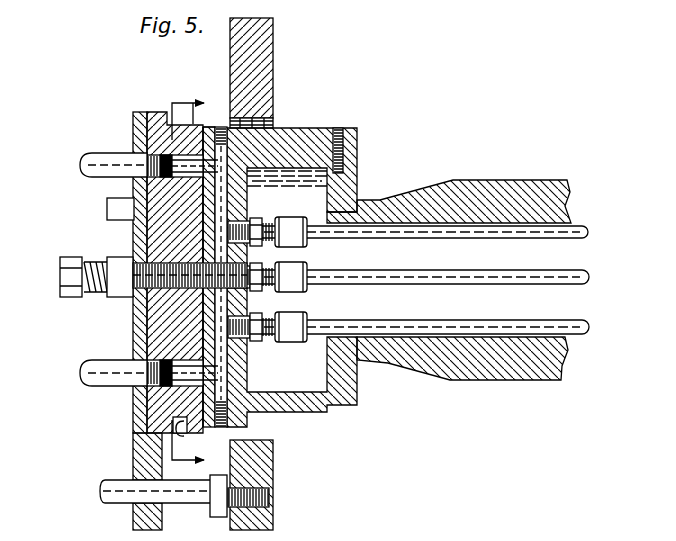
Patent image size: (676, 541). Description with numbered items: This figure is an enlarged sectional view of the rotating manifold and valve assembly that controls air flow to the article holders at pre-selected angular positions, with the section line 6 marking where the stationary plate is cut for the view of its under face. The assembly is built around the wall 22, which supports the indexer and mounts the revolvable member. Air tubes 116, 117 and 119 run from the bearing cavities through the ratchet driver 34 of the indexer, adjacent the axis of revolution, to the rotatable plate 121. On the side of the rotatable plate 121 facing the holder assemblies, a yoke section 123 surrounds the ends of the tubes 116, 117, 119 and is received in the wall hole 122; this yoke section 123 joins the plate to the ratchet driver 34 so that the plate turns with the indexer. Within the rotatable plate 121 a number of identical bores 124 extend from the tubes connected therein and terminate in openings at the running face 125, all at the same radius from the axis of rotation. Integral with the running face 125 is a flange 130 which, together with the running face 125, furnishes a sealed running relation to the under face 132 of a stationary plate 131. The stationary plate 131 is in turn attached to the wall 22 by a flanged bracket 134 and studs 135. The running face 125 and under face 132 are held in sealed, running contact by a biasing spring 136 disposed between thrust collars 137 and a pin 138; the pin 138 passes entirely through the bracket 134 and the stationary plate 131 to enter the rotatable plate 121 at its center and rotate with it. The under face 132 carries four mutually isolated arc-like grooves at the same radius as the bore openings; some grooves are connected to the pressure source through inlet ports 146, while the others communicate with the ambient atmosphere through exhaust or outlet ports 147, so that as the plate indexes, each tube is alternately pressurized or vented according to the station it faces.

The wall 22 is at (262, 50).
The wall hole 122 is at (274, 120).
The yoke section 123 is at (291, 406).
The ratchet driver 34 is at (505, 197).
The tube 119 is at (419, 229).
The tube 116 is at (385, 283).
The tube 117 is at (429, 330).
The flanged bracket 134 is at (140, 462).
The stationary plate 131 is at (158, 413).
The under face 132 is at (208, 303).
The running face 125 is at (204, 400).
The bores 124 is at (227, 193).
The inlet ports 146 is at (157, 163).
The exhaust or outlet ports 147 is at (108, 204).
The biasing spring 136 is at (82, 262).
The thrust collars 137 is at (58, 292).
The pin 138 is at (140, 258).
The studs 135 is at (118, 490).
The flange 130 is at (190, 438).
The rotatable plate 121 is at (210, 129).
The section line 6- 6 is at (198, 286).